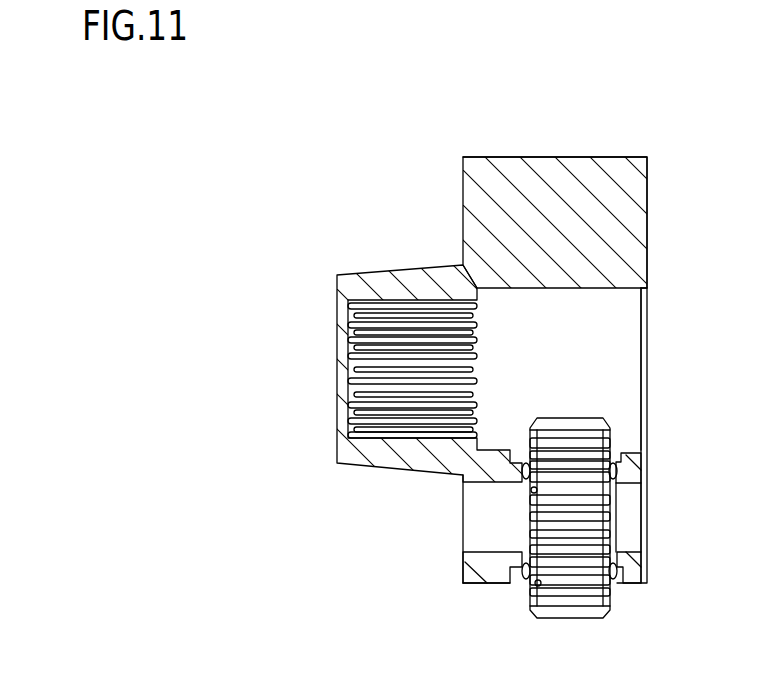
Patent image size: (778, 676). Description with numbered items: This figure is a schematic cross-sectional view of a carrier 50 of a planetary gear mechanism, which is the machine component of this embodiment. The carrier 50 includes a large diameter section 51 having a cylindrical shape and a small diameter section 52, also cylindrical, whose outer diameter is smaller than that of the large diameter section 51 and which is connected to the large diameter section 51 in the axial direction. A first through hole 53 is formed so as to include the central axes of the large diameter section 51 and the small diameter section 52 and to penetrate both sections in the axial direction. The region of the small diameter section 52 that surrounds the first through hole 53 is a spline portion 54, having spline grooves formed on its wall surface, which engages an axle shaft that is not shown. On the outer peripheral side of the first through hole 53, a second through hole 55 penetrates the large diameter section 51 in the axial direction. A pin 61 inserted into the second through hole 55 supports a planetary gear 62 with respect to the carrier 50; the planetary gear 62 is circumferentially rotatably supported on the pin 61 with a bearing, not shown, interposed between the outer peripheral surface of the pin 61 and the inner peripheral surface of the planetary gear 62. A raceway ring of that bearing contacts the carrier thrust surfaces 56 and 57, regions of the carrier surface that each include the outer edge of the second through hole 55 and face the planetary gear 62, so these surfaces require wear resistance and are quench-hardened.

The carrier 50 is at (674, 144).
The large diameter section 51 is at (571, 192).
The small diameter section 52 is at (400, 286).
The first through hole 53 is at (603, 290).
The spline portion 54 is at (372, 398).
The second through hole 55 is at (518, 568).
The carrier thrust surface 56 is at (534, 490).
The carrier thrust surface 57 is at (605, 456).
The pin 61 is at (637, 514).
The planetary gear 62 is at (570, 568).